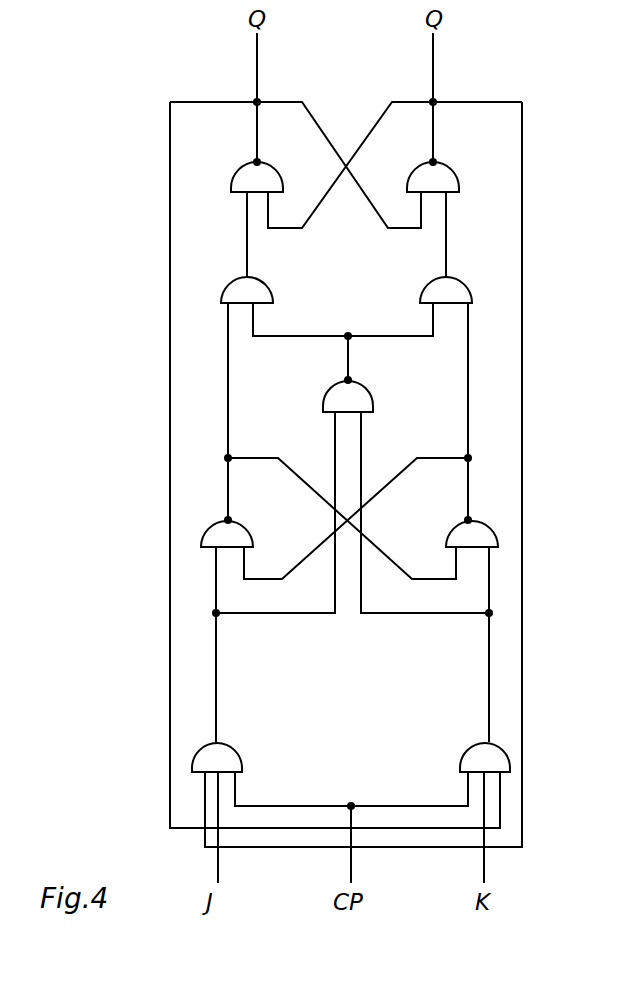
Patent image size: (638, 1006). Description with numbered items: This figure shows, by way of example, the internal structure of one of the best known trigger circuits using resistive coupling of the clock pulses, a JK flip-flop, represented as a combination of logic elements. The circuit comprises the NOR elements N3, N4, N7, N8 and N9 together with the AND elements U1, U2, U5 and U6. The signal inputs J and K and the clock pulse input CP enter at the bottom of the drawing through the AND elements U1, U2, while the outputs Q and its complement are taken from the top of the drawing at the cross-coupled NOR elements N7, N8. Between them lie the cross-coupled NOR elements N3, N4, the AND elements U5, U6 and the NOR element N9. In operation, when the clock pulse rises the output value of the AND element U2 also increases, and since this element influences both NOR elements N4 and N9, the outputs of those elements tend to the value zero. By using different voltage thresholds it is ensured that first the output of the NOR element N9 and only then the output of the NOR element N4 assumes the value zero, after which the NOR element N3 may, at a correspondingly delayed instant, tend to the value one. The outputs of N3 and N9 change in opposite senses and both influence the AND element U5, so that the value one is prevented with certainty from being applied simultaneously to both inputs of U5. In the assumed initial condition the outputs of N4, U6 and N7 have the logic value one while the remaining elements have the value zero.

The NOR element N7 is at (269, 165).
The NOR element N8 is at (442, 165).
The AND element U5 is at (262, 286).
The AND element U6 is at (461, 286).
The NOR element N9 is at (364, 396).
The NOR element N3 is at (241, 526).
The NOR element N4 is at (480, 526).
The AND element U1 is at (232, 753).
The AND element U2 is at (473, 751).